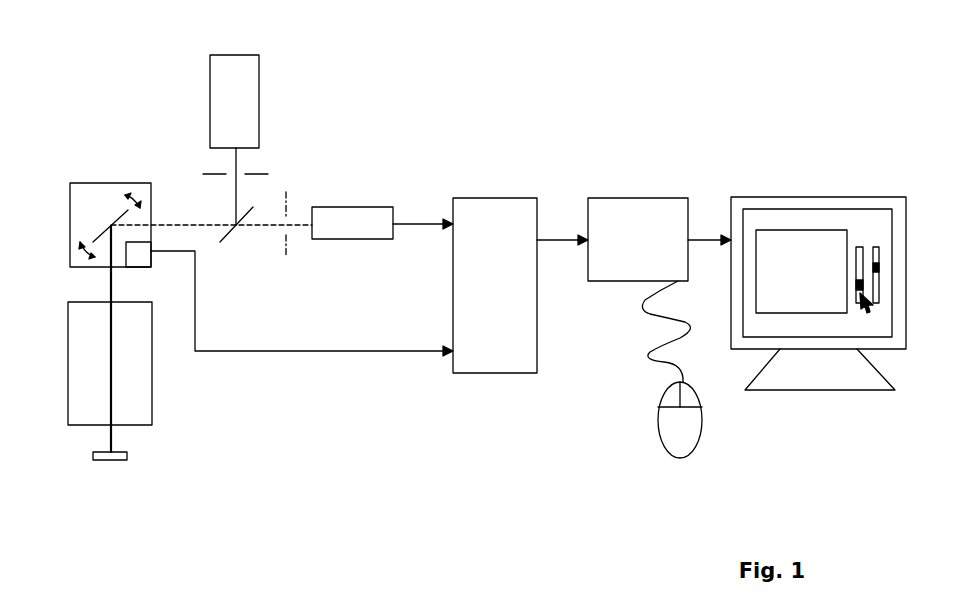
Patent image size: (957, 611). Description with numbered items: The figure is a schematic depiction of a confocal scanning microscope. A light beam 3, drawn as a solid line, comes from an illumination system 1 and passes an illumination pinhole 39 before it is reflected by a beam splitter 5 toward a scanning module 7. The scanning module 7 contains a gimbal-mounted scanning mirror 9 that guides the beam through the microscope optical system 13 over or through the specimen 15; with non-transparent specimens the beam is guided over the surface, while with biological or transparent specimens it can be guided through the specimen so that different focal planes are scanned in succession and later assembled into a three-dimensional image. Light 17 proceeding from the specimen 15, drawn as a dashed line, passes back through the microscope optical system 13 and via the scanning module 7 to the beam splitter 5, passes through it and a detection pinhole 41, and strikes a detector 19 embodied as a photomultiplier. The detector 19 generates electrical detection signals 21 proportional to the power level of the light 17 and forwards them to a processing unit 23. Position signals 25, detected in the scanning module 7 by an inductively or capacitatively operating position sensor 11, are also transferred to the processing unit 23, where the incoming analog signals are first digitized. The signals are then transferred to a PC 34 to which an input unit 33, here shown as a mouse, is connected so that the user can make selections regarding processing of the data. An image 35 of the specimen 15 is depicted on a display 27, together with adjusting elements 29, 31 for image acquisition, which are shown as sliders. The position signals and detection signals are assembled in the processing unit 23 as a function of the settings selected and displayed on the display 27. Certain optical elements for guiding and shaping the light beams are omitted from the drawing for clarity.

The illumination system 1 is at (242, 115).
The light beam 3 is at (233, 190).
The illumination pinhole 39 is at (253, 172).
The beam splitter 5 is at (237, 227).
The light proceeding from specimen 17 is at (262, 228).
The detection pinhole 41 is at (287, 250).
The scanning module 7 is at (77, 217).
The scanning mirror 9 is at (115, 216).
The position sensor 11 is at (143, 258).
The microscope optical system 13 is at (93, 385).
The specimen 15 is at (93, 452).
The detector 19 is at (360, 217).
The detection signals 21 is at (413, 222).
The processing unit 23 is at (503, 217).
The position signals 25 is at (383, 353).
The PC 34 is at (640, 232).
The input unit 33 is at (680, 432).
The display 27 is at (772, 215).
The image 35 is at (797, 297).
The adjusting element 29 is at (858, 255).
The adjusting element 31 is at (873, 247).